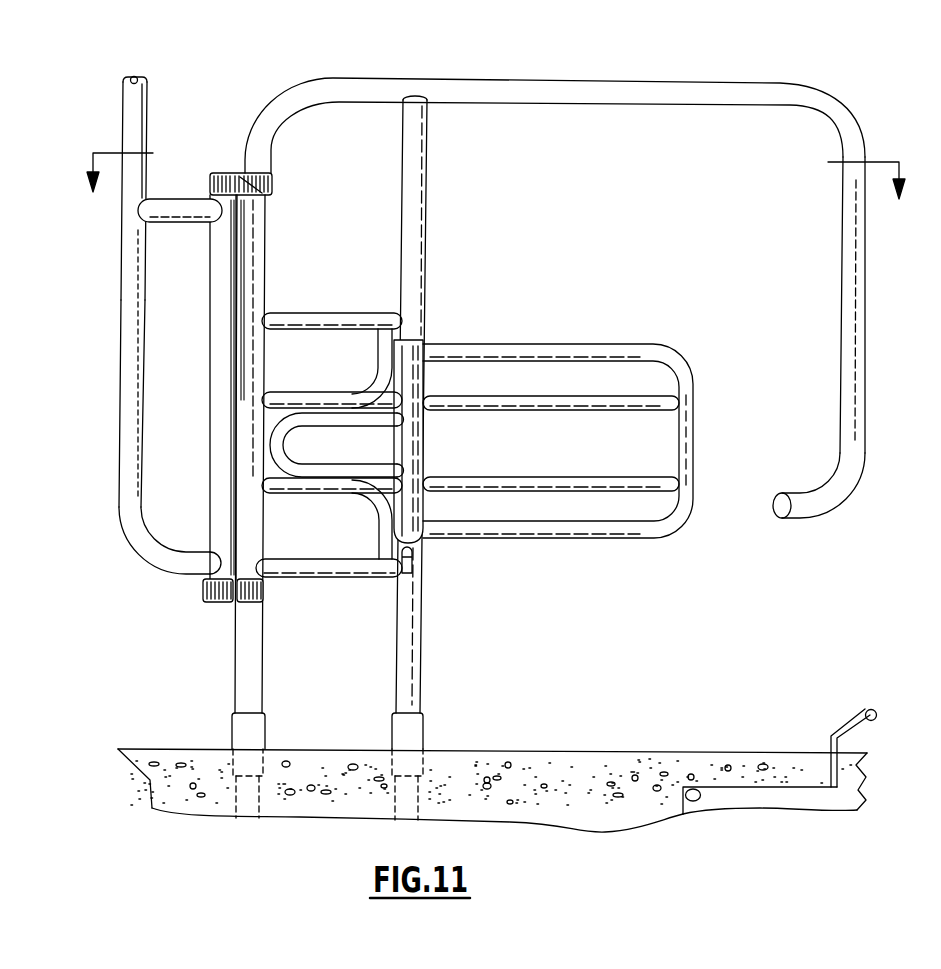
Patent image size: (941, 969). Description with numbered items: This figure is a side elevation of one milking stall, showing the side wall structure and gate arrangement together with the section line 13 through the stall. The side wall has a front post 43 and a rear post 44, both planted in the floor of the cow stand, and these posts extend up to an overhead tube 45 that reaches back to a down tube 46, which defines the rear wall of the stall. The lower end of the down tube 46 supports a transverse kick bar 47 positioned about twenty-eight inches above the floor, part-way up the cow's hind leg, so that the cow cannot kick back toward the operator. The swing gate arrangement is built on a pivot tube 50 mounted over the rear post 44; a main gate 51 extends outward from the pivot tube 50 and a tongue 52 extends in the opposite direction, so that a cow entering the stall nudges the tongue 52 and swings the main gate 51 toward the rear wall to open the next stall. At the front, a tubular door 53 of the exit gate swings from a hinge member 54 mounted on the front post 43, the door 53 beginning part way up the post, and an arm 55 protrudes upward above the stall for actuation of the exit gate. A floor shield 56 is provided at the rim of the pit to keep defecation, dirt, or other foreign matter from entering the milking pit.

The section line 13- 13 is at (498, 154).
The front post 43 is at (264, 668).
The rear post 44 is at (422, 668).
The overhead tube 45 is at (583, 92).
The down tube 46 is at (866, 330).
The kick bar 47 is at (786, 518).
The pivot tube 50 is at (423, 341).
The main gate 51 is at (625, 344).
The tongue 52 is at (342, 413).
The door 53 is at (140, 407).
The hinge member 54 is at (273, 195).
The arm 55 is at (144, 112).
The floor shield 56 is at (848, 723).